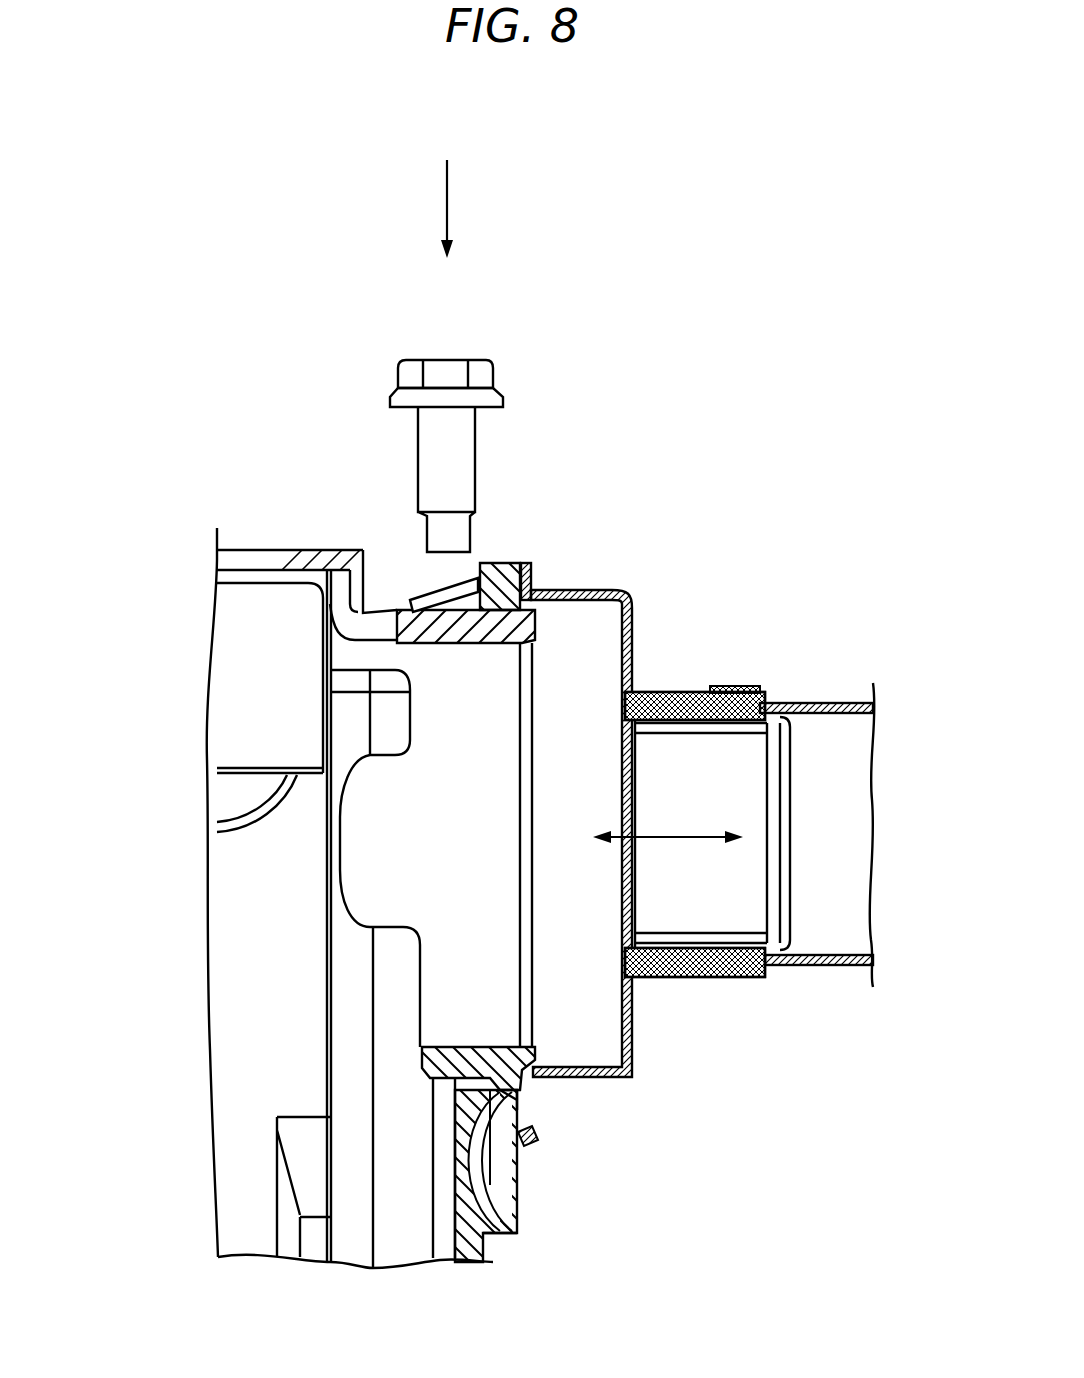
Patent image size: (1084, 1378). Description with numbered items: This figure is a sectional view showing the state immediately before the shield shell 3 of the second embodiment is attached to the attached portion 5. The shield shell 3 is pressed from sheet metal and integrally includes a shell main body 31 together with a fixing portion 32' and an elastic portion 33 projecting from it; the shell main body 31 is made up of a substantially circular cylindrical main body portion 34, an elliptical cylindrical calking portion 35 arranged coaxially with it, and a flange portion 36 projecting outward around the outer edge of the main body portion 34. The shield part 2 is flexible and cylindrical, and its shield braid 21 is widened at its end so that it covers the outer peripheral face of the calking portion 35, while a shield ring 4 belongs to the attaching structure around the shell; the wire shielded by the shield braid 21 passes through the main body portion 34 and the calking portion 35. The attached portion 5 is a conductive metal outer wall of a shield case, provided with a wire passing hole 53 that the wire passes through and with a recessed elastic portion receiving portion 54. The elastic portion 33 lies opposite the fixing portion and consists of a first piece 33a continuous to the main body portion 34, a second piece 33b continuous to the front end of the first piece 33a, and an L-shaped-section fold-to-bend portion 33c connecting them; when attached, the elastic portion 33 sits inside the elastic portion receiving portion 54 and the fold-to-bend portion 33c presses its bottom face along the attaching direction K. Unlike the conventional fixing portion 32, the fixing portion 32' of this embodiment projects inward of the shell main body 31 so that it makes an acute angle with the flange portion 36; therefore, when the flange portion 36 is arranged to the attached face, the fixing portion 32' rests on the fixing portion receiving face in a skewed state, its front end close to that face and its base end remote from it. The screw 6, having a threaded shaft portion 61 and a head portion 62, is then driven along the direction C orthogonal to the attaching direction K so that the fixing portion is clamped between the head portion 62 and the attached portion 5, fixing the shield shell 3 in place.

The shield part 2 is at (766, 831).
The shield braid 21 is at (803, 703).
The shield shell 3 is at (635, 750).
The shell main body 31 is at (603, 573).
The fixing portion 32 is at (509, 842).
The fixing portion 32' is at (378, 500).
The elastic portion 33 is at (581, 1171).
The first piece 33a is at (516, 1108).
The second piece 33b is at (528, 1138).
The fold-to-bend portion 33c is at (505, 1196).
The main body portion 34 is at (553, 590).
The calking portion 35 is at (730, 692).
The flange portion 36 is at (510, 556).
The shield ring 4 is at (710, 978).
The attached portion 5 is at (289, 841).
The wire passing hole 53 is at (473, 960).
The elastic portion receiving portion 54 is at (466, 1252).
The screw 6 is at (434, 393).
The shaft portion 61 is at (398, 376).
The head portion 62 is at (418, 476).
The direction C is at (448, 190).
The attaching direction K is at (680, 840).